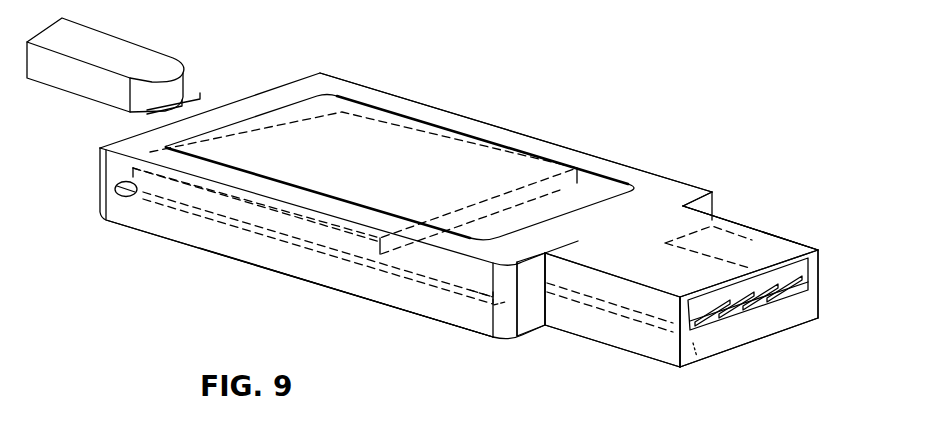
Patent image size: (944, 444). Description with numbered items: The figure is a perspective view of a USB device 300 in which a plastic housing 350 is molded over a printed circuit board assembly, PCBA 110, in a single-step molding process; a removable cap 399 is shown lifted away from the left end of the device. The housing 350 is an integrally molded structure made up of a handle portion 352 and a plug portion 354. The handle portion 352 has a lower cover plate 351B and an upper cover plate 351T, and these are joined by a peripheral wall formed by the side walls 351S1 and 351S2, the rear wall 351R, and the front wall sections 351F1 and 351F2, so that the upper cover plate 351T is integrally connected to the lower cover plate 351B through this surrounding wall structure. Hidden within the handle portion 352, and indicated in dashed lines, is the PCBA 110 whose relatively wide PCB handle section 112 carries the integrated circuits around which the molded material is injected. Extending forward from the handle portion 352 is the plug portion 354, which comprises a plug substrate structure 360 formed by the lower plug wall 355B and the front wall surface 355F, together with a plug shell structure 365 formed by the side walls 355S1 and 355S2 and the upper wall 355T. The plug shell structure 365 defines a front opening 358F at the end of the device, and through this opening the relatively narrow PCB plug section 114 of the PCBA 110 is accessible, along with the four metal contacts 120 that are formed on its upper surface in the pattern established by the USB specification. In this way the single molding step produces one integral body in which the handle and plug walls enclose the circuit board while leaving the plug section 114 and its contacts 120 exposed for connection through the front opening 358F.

The USB device 300 is at (739, 97).
The cap 399 is at (132, 48).
The plastic housing 350 is at (266, 86).
The upper cover plate 351T is at (147, 150).
The rear wall 351R is at (287, 93).
The side wall 351S2 is at (400, 103).
The side wall 351S1 is at (267, 253).
The lower cover plate 351B is at (345, 280).
The handle portion 352 is at (389, 305).
The front wall section 351F1 is at (527, 317).
The front wall section 351F2 is at (715, 218).
The PCBA 110 is at (200, 217).
The PCB handle section 112 is at (488, 283).
The upper wall 355T is at (741, 238).
The plug shell structure 365 is at (738, 217).
The side wall 355S2 is at (797, 245).
The side wall 355S1 is at (637, 322).
The plug portion 354 is at (648, 360).
The front opening 358F is at (797, 273).
The metal contacts 120 is at (741, 291).
The PCB plug section 114 is at (725, 309).
The plug substrate structure 360 is at (728, 344).
The lower plug wall 355B is at (697, 360).
The front wall 355F is at (710, 343).